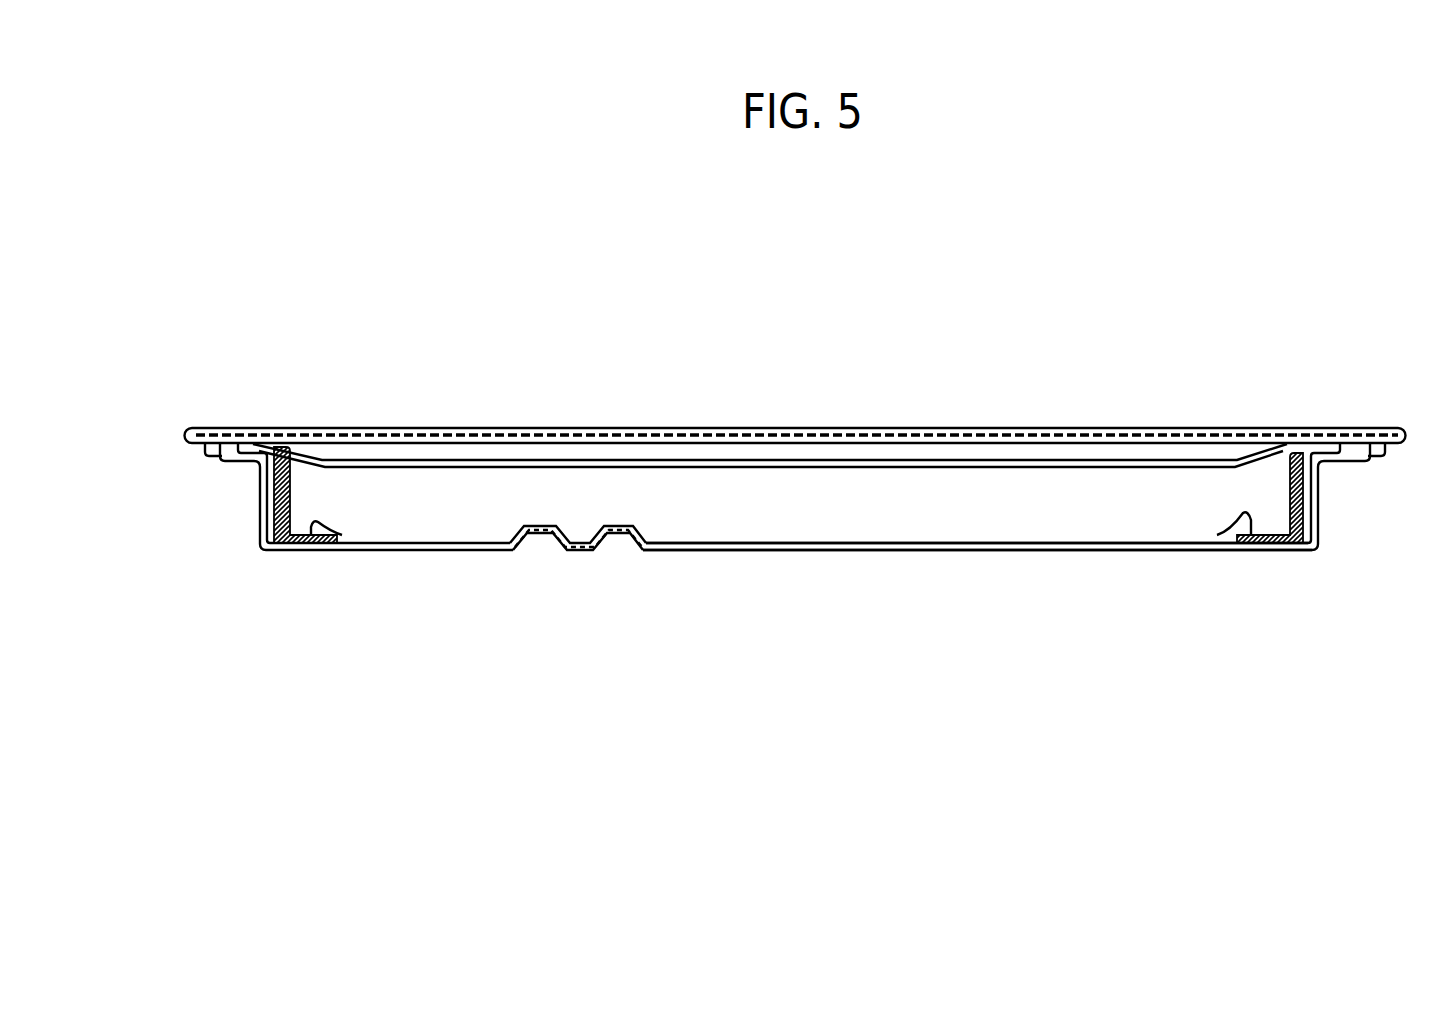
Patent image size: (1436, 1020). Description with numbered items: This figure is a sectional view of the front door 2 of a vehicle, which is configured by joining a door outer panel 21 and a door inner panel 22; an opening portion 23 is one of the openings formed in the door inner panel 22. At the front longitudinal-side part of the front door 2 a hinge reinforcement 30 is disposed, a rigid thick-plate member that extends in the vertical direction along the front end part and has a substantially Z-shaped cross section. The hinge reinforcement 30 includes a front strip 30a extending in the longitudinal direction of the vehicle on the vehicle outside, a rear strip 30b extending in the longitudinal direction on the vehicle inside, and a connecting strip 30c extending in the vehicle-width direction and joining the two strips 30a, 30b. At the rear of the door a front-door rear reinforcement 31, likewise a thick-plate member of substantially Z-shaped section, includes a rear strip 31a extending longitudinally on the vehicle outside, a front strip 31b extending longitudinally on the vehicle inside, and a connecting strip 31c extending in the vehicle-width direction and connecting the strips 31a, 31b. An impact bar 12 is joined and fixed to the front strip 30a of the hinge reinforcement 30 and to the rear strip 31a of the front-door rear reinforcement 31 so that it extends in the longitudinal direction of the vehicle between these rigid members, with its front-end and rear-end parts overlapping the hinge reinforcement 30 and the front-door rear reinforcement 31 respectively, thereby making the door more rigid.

The front door 2 is at (642, 406).
The impact bar 12 is at (667, 468).
The door outer panel 21 is at (828, 428).
The door inner panel 22 is at (480, 549).
The opening portion 23 is at (882, 551).
The hinge reinforcement 30 is at (257, 497).
The front strip 30a is at (249, 427).
The rear strip 30b is at (340, 540).
The connecting strip 30c is at (290, 478).
The front-door rear reinforcement 31 is at (1317, 500).
The rear strip 31a is at (1327, 437).
The front strip 31b is at (1223, 527).
The connecting strip 31c is at (1290, 477).